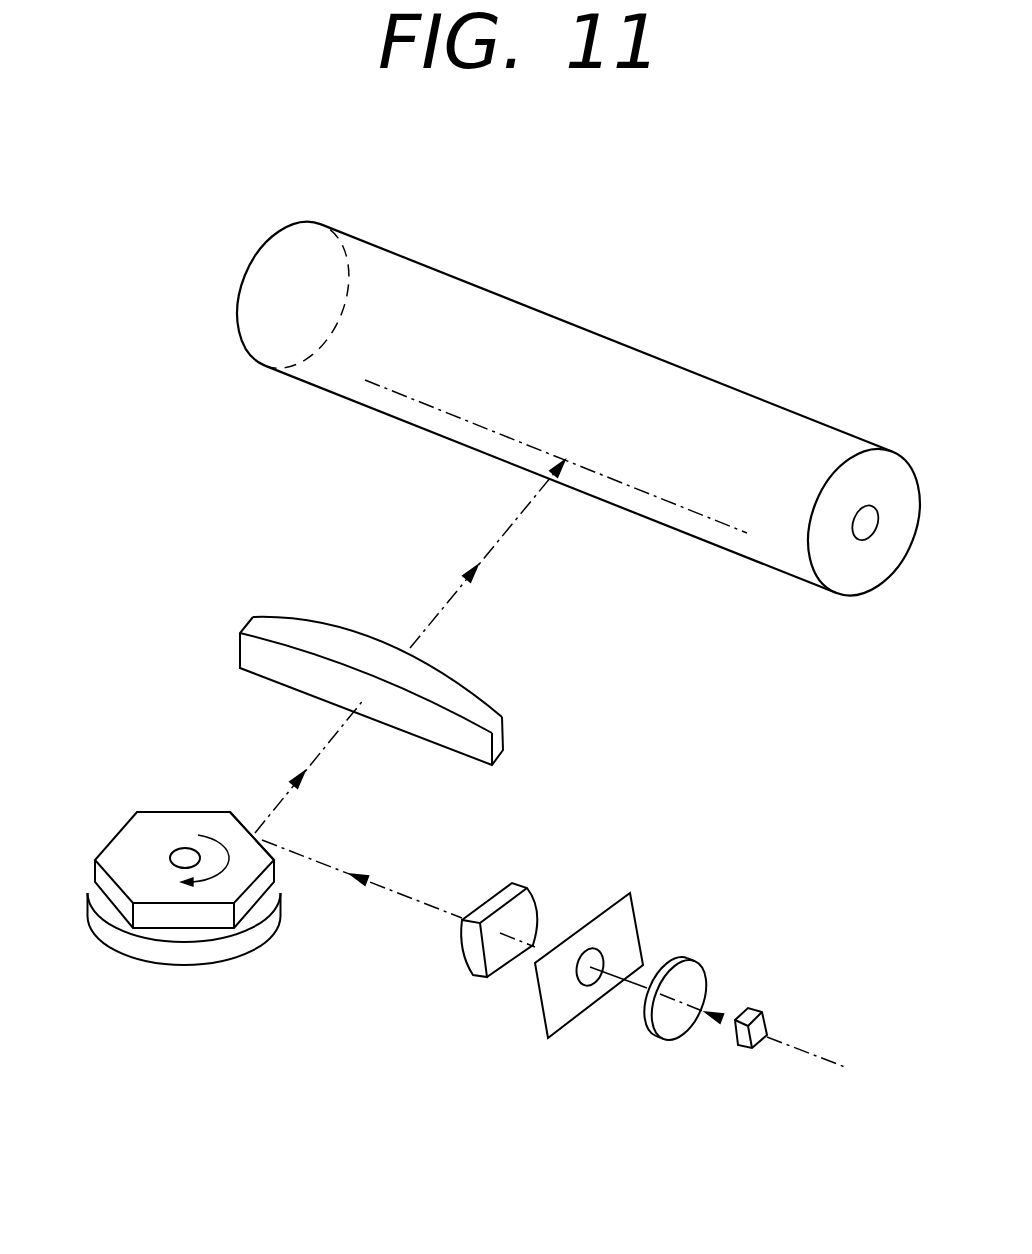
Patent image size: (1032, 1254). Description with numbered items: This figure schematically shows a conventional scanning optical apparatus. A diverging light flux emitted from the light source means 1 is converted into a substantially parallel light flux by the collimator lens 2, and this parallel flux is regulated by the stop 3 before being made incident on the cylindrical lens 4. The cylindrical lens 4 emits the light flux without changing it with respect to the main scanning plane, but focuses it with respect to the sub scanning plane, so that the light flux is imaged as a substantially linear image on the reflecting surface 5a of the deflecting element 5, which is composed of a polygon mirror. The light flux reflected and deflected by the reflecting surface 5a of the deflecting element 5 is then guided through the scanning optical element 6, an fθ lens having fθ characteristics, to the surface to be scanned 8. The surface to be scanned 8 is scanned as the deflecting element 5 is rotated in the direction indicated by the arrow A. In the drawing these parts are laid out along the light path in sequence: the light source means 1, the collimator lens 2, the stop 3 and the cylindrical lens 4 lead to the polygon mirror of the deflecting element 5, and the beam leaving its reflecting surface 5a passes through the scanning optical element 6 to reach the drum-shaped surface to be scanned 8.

The light source means 1 is at (740, 1047).
The collimator lens 2 is at (668, 1028).
The stop 3 is at (552, 992).
The cylindrical lens 4 is at (470, 950).
The deflecting element 5 is at (128, 843).
The reflecting surface 5a is at (240, 810).
The scanning optical element (fθ lens) 6 is at (325, 637).
The surface to be scanned 8 is at (773, 572).
The arrow indicating rotation direction A is at (213, 880).